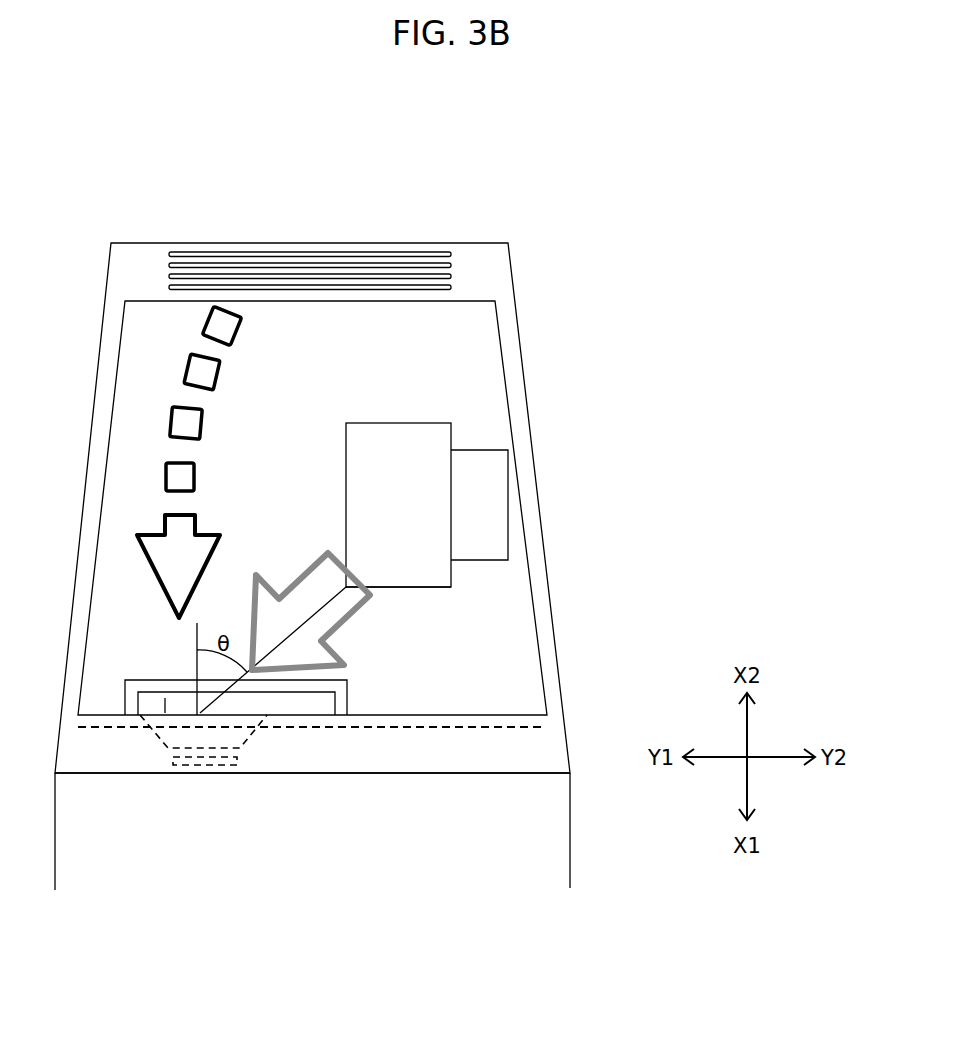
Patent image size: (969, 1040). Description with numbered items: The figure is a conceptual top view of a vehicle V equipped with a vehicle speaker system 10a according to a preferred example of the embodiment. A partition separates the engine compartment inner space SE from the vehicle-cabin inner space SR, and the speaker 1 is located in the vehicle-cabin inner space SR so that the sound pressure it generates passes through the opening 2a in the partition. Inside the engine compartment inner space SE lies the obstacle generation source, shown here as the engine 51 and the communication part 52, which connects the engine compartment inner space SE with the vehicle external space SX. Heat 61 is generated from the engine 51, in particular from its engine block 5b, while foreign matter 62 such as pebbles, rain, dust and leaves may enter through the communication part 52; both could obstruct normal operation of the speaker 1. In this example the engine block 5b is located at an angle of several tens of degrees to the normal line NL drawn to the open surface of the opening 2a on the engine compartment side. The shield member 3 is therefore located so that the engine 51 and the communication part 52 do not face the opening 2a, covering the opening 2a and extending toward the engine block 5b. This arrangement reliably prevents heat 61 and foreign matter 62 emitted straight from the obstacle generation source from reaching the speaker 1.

The vehicle V is at (551, 241).
The communication part 52 is at (262, 300).
The foreign matter 62 is at (195, 480).
The engine 51 is at (467, 449).
The engine block 5b is at (422, 570).
The heat 61 is at (330, 622).
The shield member 3 is at (158, 685).
The opening 2a is at (165, 711).
The normal line NL is at (197, 660).
The speaker 1 is at (208, 767).
The vehicle speaker system 10a is at (275, 757).
The vehicle external space SX is at (318, 209).
The engine compartment inner space SE is at (426, 370).
The vehicle-cabin inner space SR is at (147, 829).